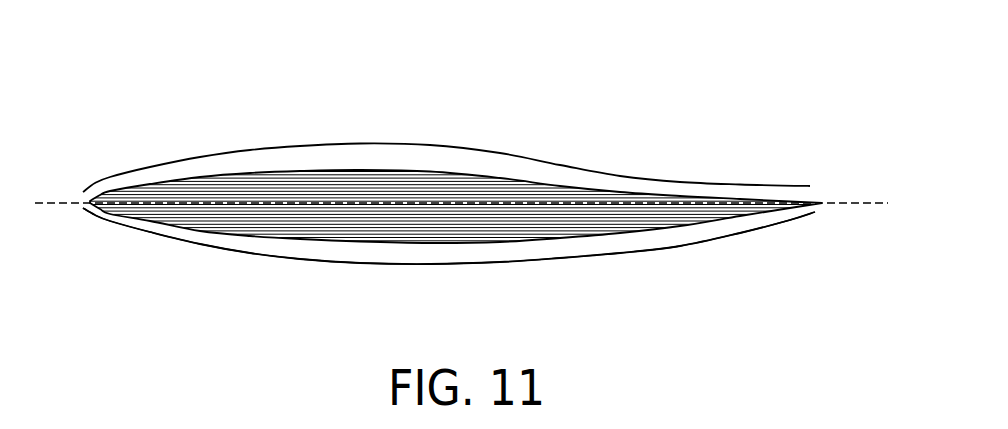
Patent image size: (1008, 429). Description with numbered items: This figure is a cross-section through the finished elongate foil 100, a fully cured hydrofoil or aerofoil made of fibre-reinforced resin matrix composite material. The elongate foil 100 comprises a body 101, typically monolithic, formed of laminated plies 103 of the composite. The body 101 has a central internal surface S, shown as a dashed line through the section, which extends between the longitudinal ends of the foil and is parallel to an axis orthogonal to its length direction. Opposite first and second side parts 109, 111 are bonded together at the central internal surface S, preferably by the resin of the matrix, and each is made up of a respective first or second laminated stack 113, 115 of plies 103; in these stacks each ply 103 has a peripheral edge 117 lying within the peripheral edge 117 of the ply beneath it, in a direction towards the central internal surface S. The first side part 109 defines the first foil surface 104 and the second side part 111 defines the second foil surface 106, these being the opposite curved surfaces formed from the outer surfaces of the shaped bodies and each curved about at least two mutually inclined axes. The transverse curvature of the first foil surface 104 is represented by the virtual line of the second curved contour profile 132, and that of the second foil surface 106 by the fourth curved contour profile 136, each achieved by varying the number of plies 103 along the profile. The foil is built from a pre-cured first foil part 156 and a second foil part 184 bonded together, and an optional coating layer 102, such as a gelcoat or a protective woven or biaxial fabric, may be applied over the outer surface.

The elongate foil 100 is at (228, 192).
The body 101 is at (377, 190).
The coating layer 102 is at (318, 168).
The second foil part 184 is at (188, 192).
The first foil surface 104 is at (468, 182).
The first side part 109 is at (502, 192).
The second foil surface 106 is at (550, 240).
The first laminated stack 113 is at (348, 188).
The second laminated stack 115 is at (422, 223).
The second side part 111 is at (272, 228).
The peripheral edge 117 is at (613, 237).
The first foil part 156 is at (148, 220).
The second curved contour profile 132 is at (632, 177).
The fourth curved contour profile 136 is at (687, 242).
The plies 103 is at (200, 222).
The central internal surface S is at (60, 203).